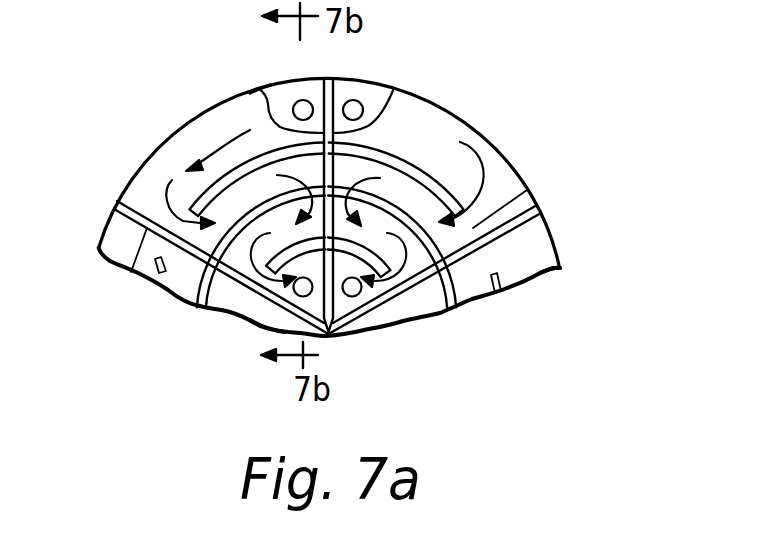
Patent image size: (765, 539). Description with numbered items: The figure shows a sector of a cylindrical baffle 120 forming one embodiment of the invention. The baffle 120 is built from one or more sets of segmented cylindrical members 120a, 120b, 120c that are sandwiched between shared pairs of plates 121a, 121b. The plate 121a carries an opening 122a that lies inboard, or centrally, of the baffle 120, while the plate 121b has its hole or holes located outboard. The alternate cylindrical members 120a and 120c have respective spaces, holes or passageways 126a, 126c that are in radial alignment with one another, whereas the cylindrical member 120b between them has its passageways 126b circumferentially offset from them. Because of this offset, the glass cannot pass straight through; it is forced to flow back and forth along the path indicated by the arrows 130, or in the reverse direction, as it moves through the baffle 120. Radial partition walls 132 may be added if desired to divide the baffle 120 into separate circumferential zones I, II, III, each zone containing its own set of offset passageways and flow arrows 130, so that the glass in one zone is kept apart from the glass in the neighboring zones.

The cylindrical baffle 120 is at (157, 148).
The segmented cylindrical member 120a is at (392, 303).
The segmented cylindrical member 120b is at (467, 290).
The segmented cylindrical member 120c is at (563, 268).
The plate 121a is at (262, 328).
The plate 121b is at (258, 96).
The opening 122a is at (355, 294).
The passageway 126a is at (437, 325).
The passageway 126b is at (207, 312).
The passageway 126c is at (530, 190).
The arrows 130 is at (368, 177).
The radial partition wall 132 is at (323, 83).
The circumferential zone I is at (543, 240).
The circumferential zone II is at (502, 166).
The circumferential zone III is at (212, 116).